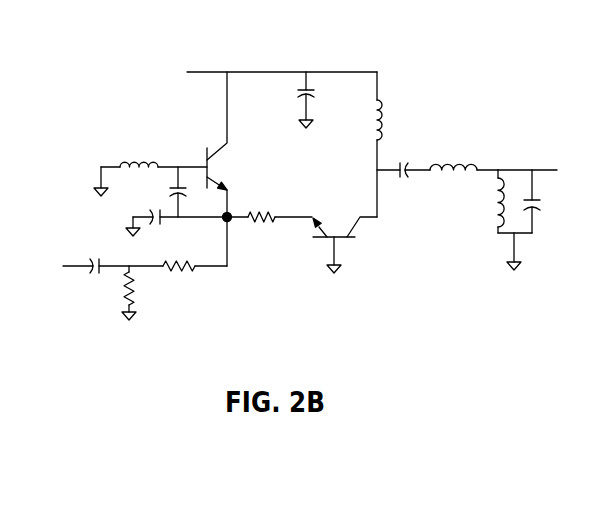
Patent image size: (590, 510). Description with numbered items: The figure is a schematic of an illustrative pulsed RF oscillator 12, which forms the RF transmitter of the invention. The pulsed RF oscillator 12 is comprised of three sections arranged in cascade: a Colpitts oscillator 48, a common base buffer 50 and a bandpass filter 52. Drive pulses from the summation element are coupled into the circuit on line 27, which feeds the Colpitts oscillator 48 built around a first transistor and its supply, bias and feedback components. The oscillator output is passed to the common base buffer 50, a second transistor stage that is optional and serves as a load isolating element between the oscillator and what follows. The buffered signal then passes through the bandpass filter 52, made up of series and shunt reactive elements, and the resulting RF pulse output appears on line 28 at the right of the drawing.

The pulsed RF oscillator 12 is at (382, 52).
The line 27 is at (80, 270).
The line 28 is at (545, 163).
The Colpitts oscillator 48 is at (237, 277).
The common base buffer 50 is at (312, 270).
The bandpass filter 52 is at (450, 243).